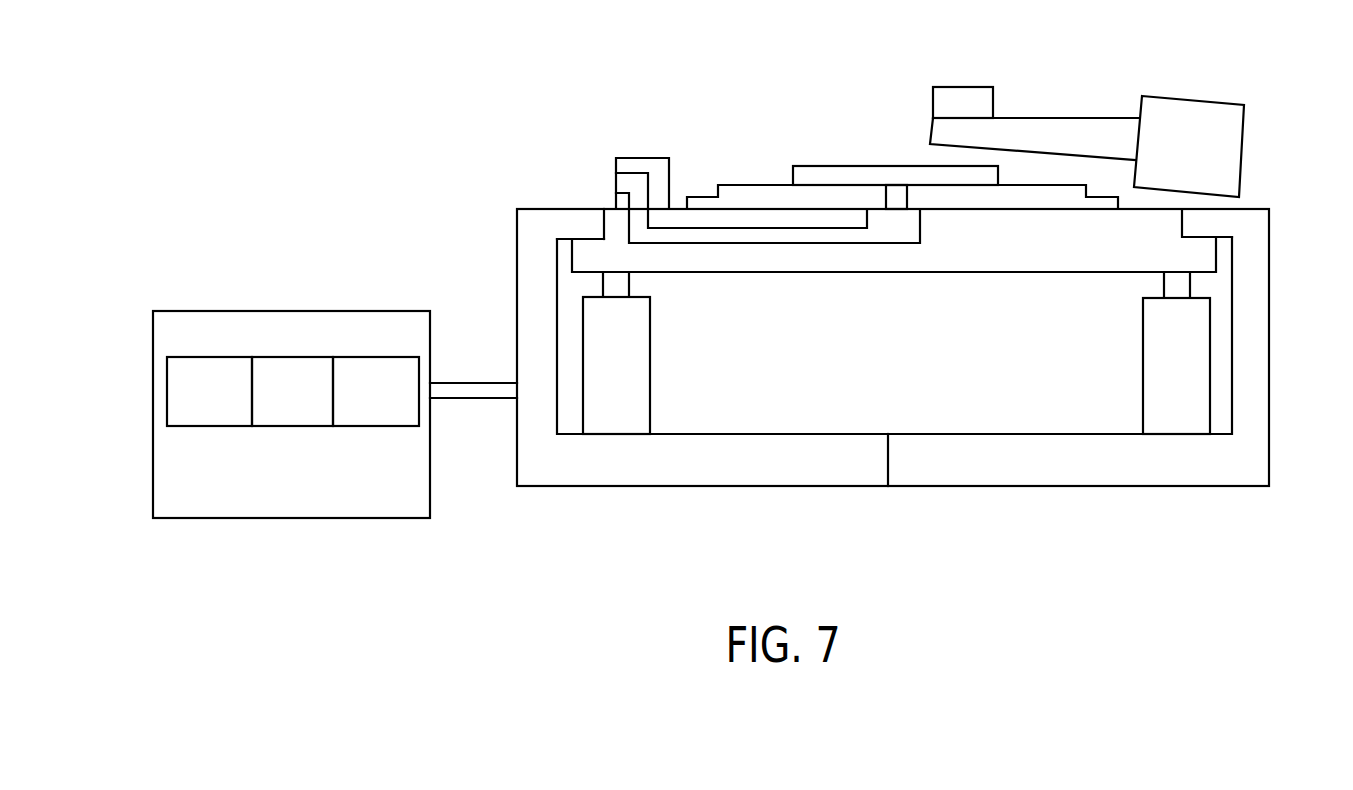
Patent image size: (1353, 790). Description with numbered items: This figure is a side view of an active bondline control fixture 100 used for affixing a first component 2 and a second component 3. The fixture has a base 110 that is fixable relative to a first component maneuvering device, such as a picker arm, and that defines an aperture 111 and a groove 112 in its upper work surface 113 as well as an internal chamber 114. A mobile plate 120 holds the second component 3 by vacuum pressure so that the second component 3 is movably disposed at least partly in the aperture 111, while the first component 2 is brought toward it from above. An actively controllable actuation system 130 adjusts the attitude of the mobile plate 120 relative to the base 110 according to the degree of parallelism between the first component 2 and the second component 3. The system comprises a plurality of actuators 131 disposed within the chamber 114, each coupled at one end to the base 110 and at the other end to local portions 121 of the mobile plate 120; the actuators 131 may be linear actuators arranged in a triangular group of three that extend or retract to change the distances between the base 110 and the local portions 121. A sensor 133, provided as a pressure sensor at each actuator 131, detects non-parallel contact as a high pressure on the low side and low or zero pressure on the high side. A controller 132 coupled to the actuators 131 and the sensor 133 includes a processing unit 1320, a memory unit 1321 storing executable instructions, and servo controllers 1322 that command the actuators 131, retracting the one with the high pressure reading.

The active bondline control fixture 100 is at (491, 126).
The first component 2 is at (1048, 118).
The second component 3 is at (832, 165).
The base 110 is at (713, 486).
The aperture 111 is at (640, 213).
The groove 112 is at (897, 195).
The upper work surface 113 is at (573, 220).
The chamber 114 is at (844, 380).
The mobile plate 120 is at (948, 263).
The local portions 121 is at (608, 253).
The actively controllable actuation system 130 is at (487, 399).
The actuators 131 is at (640, 393).
The controller 132 is at (291, 423).
The sensor 133 is at (618, 285).
The processing unit 1320 is at (227, 378).
The memory unit 1321 is at (303, 375).
The servo controllers 1322 is at (375, 380).